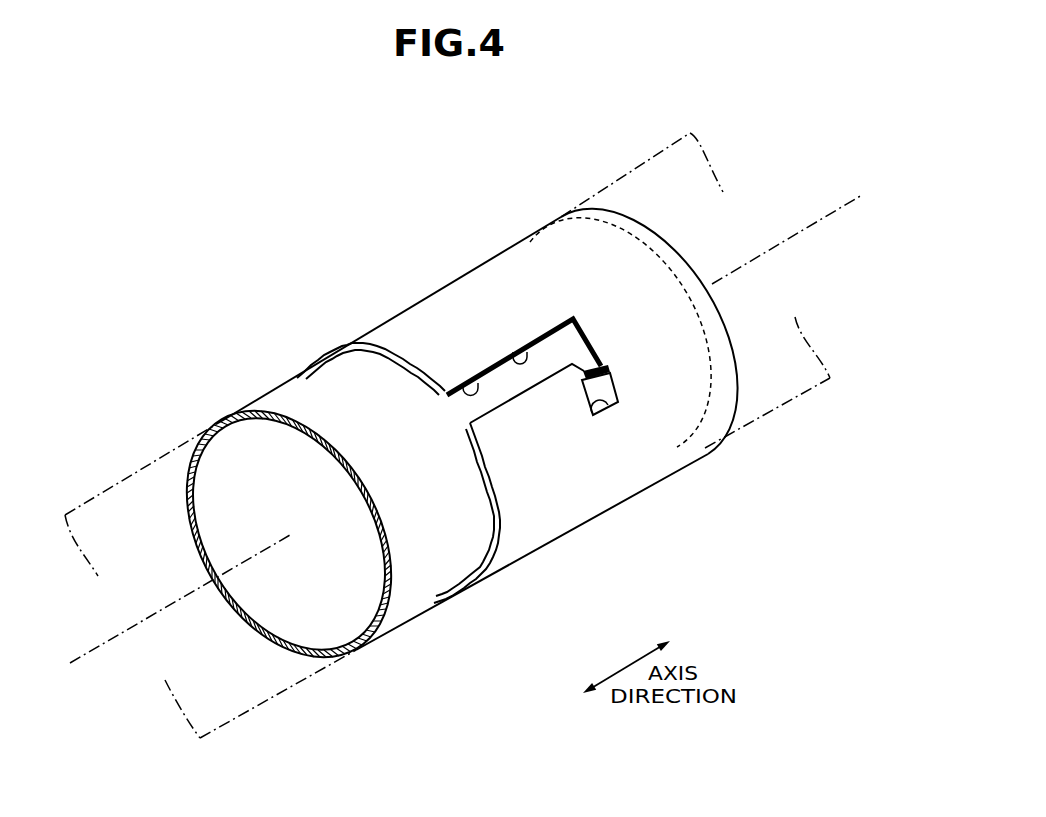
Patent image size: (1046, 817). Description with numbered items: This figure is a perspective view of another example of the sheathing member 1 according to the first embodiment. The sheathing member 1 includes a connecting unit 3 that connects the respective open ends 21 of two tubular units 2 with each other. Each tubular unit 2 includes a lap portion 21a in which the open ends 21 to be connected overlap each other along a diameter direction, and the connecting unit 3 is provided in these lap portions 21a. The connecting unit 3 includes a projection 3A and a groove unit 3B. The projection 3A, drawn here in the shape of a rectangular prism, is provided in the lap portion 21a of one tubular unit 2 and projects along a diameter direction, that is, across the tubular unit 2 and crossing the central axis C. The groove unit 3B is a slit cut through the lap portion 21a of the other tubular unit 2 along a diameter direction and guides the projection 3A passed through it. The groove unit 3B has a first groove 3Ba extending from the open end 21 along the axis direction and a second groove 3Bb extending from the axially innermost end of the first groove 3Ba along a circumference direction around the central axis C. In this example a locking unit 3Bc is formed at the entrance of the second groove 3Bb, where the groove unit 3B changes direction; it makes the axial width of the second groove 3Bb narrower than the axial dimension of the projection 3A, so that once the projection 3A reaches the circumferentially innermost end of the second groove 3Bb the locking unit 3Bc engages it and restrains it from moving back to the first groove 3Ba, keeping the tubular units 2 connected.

The sheathing member 1 is at (432, 176).
The tubular unit 2 is at (490, 250).
The open end 21 is at (298, 387).
The lap portion 21a is at (547, 222).
The connecting unit 3 is at (591, 413).
The projection 3A is at (610, 390).
The groove unit 3B is at (455, 387).
The first groove 3Ba is at (513, 356).
The second groove 3Bb is at (607, 408).
The locking unit 3Bc is at (590, 352).
The central axis C is at (462, 429).